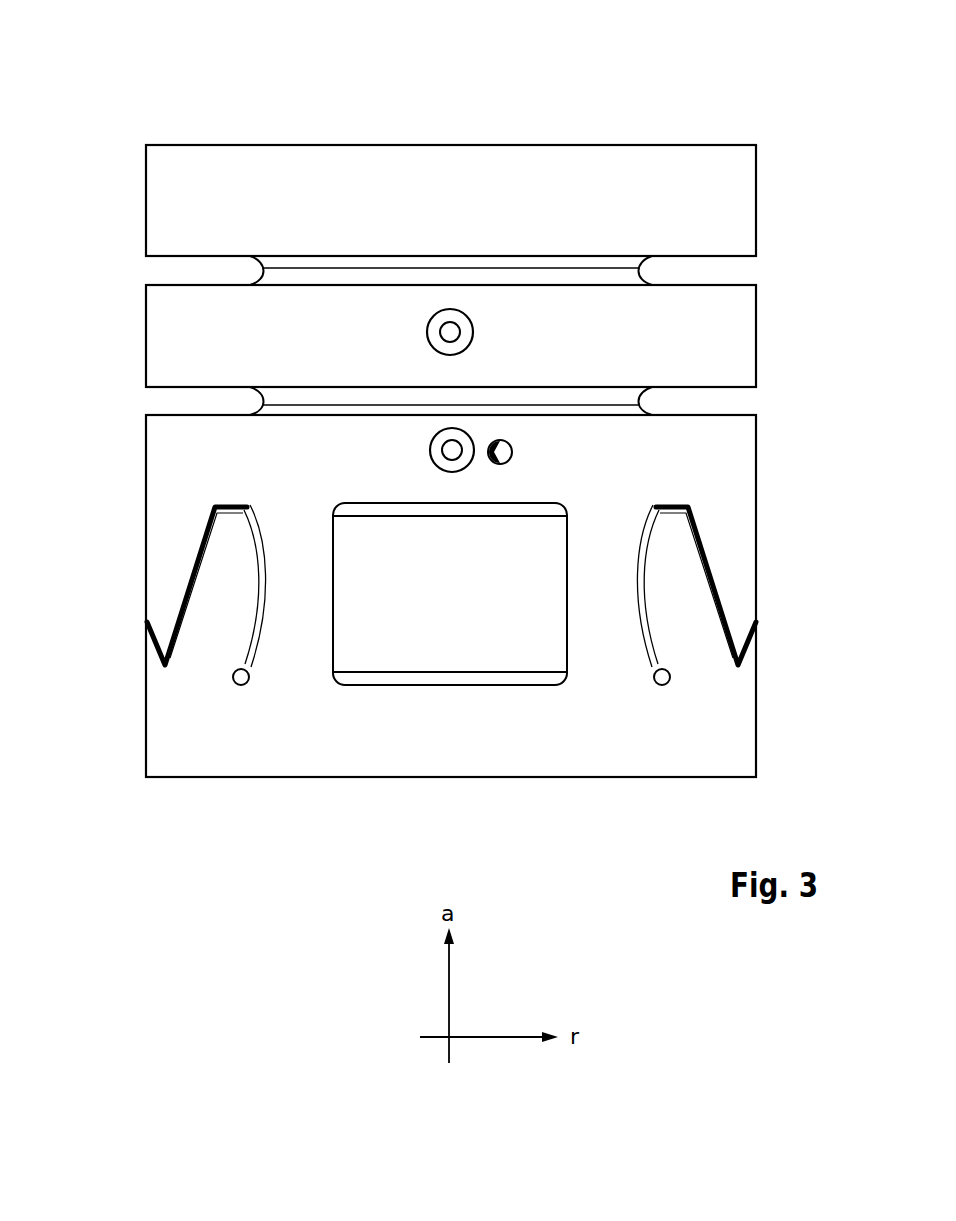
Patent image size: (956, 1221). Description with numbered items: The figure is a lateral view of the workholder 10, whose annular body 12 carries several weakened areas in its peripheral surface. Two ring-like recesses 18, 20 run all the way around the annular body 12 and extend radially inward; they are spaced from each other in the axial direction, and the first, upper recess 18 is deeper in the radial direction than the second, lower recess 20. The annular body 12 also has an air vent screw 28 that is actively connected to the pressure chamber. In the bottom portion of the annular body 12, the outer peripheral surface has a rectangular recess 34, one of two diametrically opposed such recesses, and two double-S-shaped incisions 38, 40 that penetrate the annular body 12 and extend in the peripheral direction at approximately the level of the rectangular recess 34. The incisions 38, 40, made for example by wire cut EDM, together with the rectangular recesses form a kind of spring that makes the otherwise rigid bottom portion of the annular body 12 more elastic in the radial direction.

The workholder 10 is at (158, 87).
The annular body 12 is at (271, 185).
The first recess 18 is at (146, 266).
The second recess 20 is at (146, 402).
The air vent screw 28 is at (466, 318).
The rectangular recess 34 is at (378, 640).
The double-S-shaped incision 38 is at (706, 547).
The double-S-shaped incision 40 is at (207, 526).